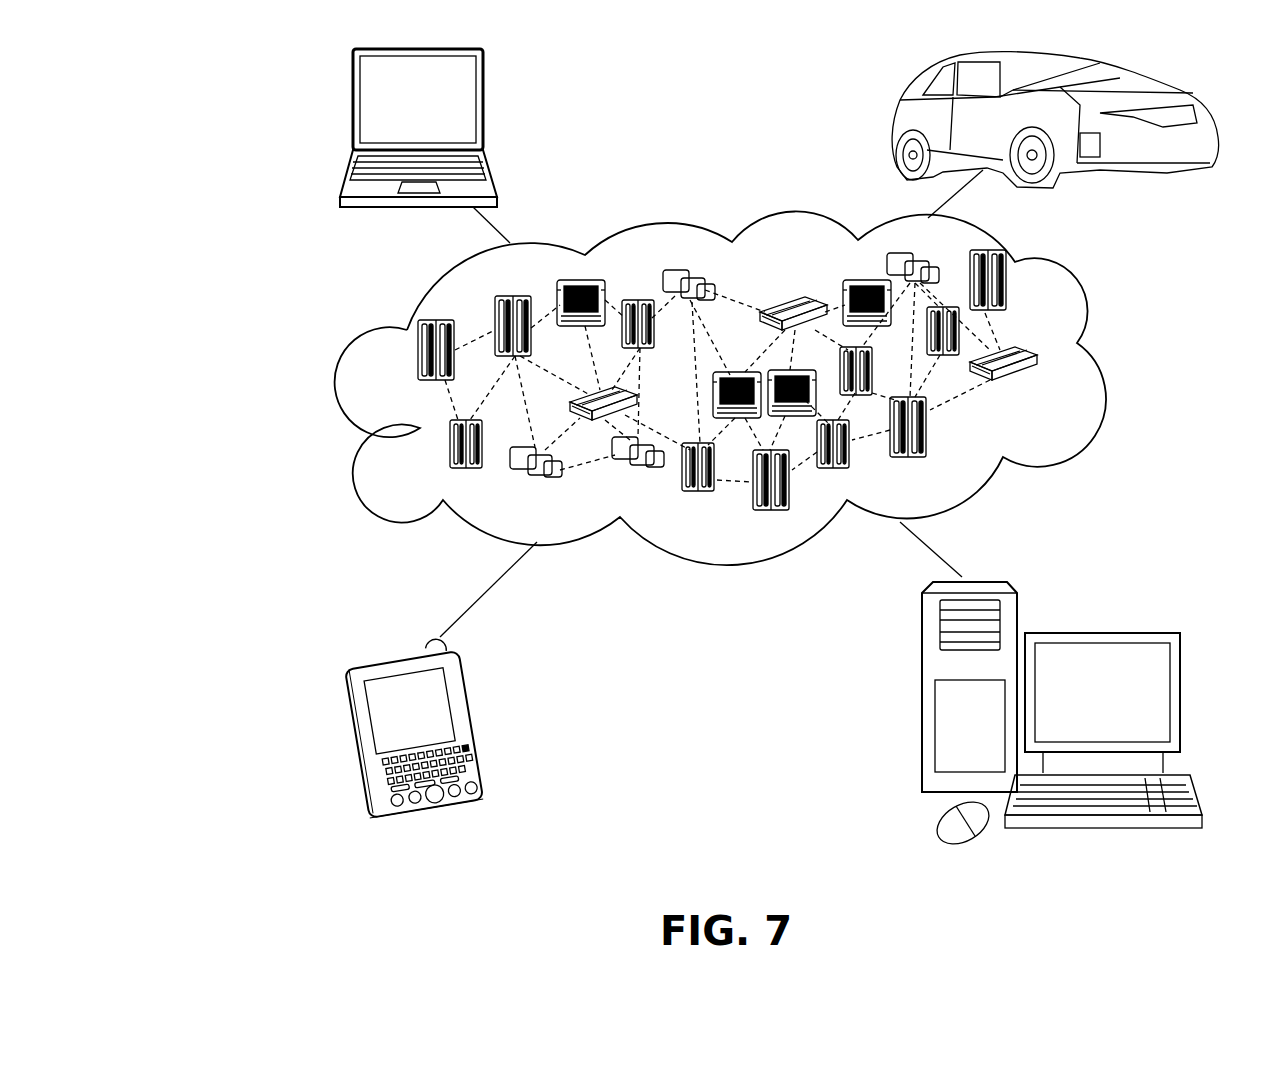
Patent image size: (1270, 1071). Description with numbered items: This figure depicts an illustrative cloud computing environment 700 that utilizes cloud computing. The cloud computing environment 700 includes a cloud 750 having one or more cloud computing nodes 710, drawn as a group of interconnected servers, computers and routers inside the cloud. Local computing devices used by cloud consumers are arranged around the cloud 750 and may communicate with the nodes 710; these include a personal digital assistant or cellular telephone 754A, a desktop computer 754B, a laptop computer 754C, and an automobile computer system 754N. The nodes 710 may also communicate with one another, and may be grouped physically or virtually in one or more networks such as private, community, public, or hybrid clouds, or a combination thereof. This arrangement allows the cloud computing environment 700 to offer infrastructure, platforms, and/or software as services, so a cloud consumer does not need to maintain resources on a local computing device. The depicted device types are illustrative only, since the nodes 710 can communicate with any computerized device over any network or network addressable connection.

The cloud computing environment 700 is at (197, 74).
The cloud computing nodes 710 is at (1050, 390).
The cloud 750 is at (1098, 363).
The personal digital assistant or cellular telephone 754A is at (473, 720).
The desktop computer 754B is at (1100, 632).
The laptop computer 754C is at (485, 110).
The automobile computer system 754N is at (892, 120).